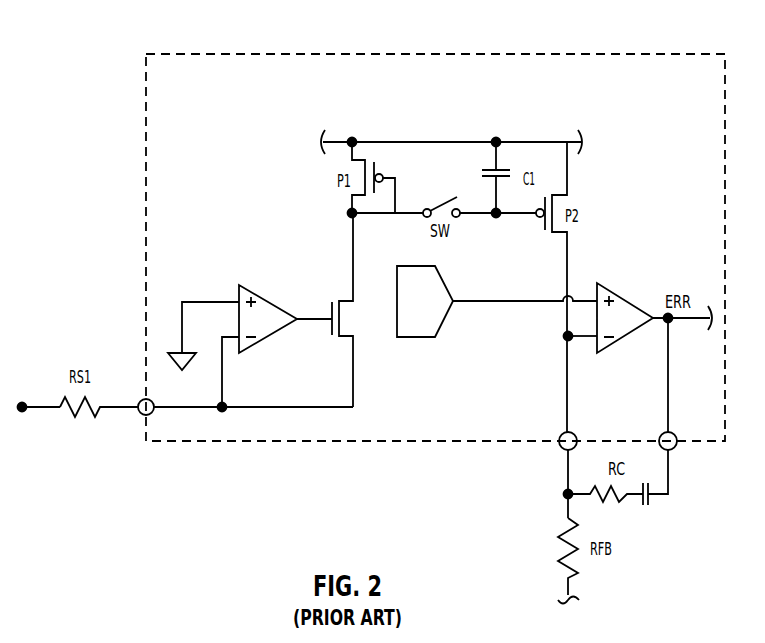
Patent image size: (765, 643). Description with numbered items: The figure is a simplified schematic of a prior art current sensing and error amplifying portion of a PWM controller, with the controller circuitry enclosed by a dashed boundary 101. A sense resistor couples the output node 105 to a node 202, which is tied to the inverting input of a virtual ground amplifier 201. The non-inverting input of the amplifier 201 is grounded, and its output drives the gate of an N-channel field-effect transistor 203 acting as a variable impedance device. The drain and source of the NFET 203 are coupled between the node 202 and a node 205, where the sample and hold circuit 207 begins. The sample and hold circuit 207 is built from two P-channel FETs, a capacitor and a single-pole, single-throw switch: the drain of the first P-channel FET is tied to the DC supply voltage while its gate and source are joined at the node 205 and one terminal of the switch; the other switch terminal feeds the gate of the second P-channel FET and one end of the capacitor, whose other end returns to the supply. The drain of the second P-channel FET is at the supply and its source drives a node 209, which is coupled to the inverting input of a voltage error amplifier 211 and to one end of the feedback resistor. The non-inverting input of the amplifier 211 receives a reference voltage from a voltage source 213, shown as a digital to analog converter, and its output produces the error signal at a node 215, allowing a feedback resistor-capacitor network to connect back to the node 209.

The switching regulator control circuit 101 is at (146, 90).
The output node 105 is at (23, 411).
The virtual ground amplifier 201 is at (267, 285).
The node 202 is at (155, 414).
The N-channel field-effect transistor 203 is at (350, 298).
The node 205 is at (348, 213).
The sample and hold circuit 207 is at (453, 171).
The node 209 is at (561, 433).
The voltage error amplifier 211 is at (632, 302).
The voltage source 213 is at (418, 266).
The node 215 is at (672, 432).